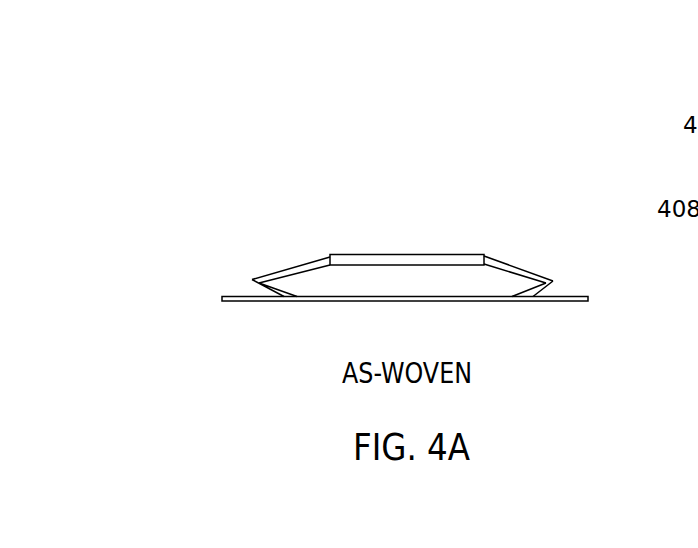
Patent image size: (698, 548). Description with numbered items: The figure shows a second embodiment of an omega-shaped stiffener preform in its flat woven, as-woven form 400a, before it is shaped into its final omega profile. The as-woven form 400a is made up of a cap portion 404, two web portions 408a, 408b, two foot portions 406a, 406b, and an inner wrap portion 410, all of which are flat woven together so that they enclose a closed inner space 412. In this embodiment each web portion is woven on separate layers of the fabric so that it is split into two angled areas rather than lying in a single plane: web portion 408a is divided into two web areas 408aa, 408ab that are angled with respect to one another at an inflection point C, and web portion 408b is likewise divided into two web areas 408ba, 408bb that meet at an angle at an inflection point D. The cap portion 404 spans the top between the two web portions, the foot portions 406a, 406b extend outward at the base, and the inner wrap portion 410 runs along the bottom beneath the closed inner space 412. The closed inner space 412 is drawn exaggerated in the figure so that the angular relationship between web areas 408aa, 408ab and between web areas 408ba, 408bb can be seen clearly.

The as-woven form 400a is at (276, 150).
The cap portion 404 is at (405, 254).
The foot portion 406a is at (247, 302).
The foot portion 406b is at (575, 302).
The web portion 408a is at (231, 249).
The web area 408aa is at (275, 272).
The web area 408ab is at (252, 280).
The web portion 408b is at (513, 215).
The web area 408ba is at (530, 267).
The web area 408bb is at (550, 289).
The inner wrap portion 410 is at (345, 302).
The closed inner space 412 is at (480, 283).
The inflection point C is at (252, 280).
The inflection point D is at (563, 280).